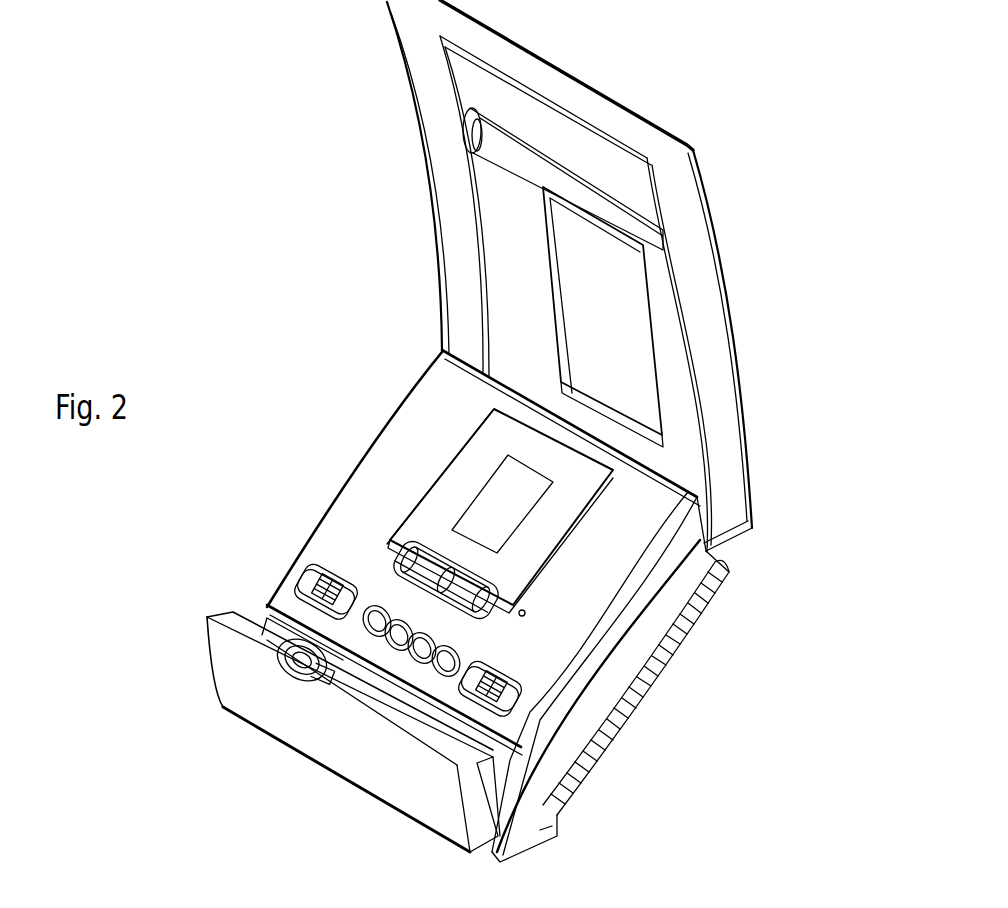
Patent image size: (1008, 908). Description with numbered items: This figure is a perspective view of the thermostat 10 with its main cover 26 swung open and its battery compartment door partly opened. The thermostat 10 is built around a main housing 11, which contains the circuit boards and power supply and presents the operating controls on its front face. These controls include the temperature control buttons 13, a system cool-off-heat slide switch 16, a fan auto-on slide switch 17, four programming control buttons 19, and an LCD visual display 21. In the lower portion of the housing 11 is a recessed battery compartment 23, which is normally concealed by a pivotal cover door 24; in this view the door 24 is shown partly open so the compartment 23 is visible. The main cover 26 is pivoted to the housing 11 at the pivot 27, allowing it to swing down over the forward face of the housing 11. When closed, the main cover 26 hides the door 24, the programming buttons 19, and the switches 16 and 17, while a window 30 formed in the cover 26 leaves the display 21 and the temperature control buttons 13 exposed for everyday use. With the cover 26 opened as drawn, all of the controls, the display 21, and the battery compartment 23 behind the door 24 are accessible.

The thermostat 10 is at (478, 598).
The main housing 11 is at (388, 453).
The temperature control buttons 13 is at (488, 623).
The system cool-off-heat slide switch 16 is at (310, 567).
The fan auto-on slide switch 17 is at (515, 708).
The programming control buttons 19 is at (417, 670).
The LCD visual display 21 is at (487, 447).
The battery compartment 23 is at (363, 690).
The cover door 24 is at (233, 667).
The main cover 26 is at (569, 276).
The pivot 27 is at (735, 505).
The window 30 is at (560, 277).